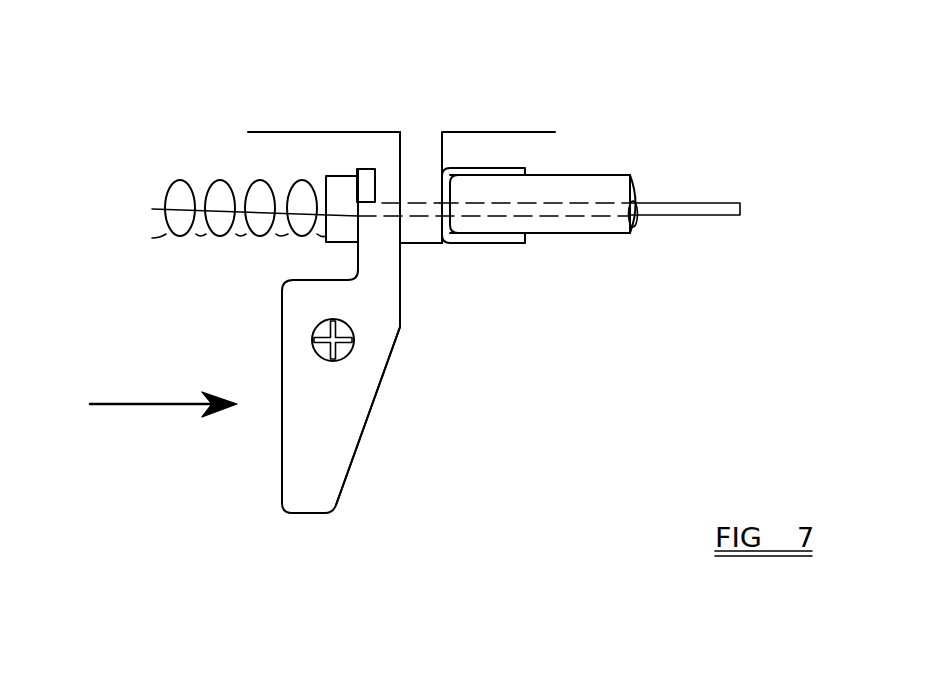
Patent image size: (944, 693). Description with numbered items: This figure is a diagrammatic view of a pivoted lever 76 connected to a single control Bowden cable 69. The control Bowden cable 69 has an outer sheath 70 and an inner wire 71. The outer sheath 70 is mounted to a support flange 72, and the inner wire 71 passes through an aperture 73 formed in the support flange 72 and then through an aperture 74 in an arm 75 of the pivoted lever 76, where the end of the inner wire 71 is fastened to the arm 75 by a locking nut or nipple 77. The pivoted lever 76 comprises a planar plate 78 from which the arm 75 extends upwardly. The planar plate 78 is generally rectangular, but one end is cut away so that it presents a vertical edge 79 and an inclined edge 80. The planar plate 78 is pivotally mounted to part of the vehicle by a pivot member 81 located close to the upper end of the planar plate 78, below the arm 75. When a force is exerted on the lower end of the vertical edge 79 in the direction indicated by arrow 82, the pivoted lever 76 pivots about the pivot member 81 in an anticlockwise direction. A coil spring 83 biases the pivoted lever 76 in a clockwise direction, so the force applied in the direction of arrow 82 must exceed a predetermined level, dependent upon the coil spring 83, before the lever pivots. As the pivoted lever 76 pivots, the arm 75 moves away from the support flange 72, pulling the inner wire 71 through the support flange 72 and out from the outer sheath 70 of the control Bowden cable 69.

The control Bowden cable 69 is at (626, 172).
The outer sheath 70 is at (563, 233).
The inner wire 71 is at (693, 213).
The support flange 72 is at (434, 133).
The aperture 73 is at (417, 215).
The aperture 74 is at (375, 170).
The arm 75 is at (385, 180).
The pivoted lever 76 is at (372, 440).
The locking nut or nipple 77 is at (345, 243).
The planar plate 78 is at (307, 515).
The vertical edge 79 is at (280, 424).
The inclined edge 80 is at (383, 382).
The pivot member 81 is at (313, 337).
The arrow 82 is at (138, 402).
The coil spring 83 is at (217, 188).